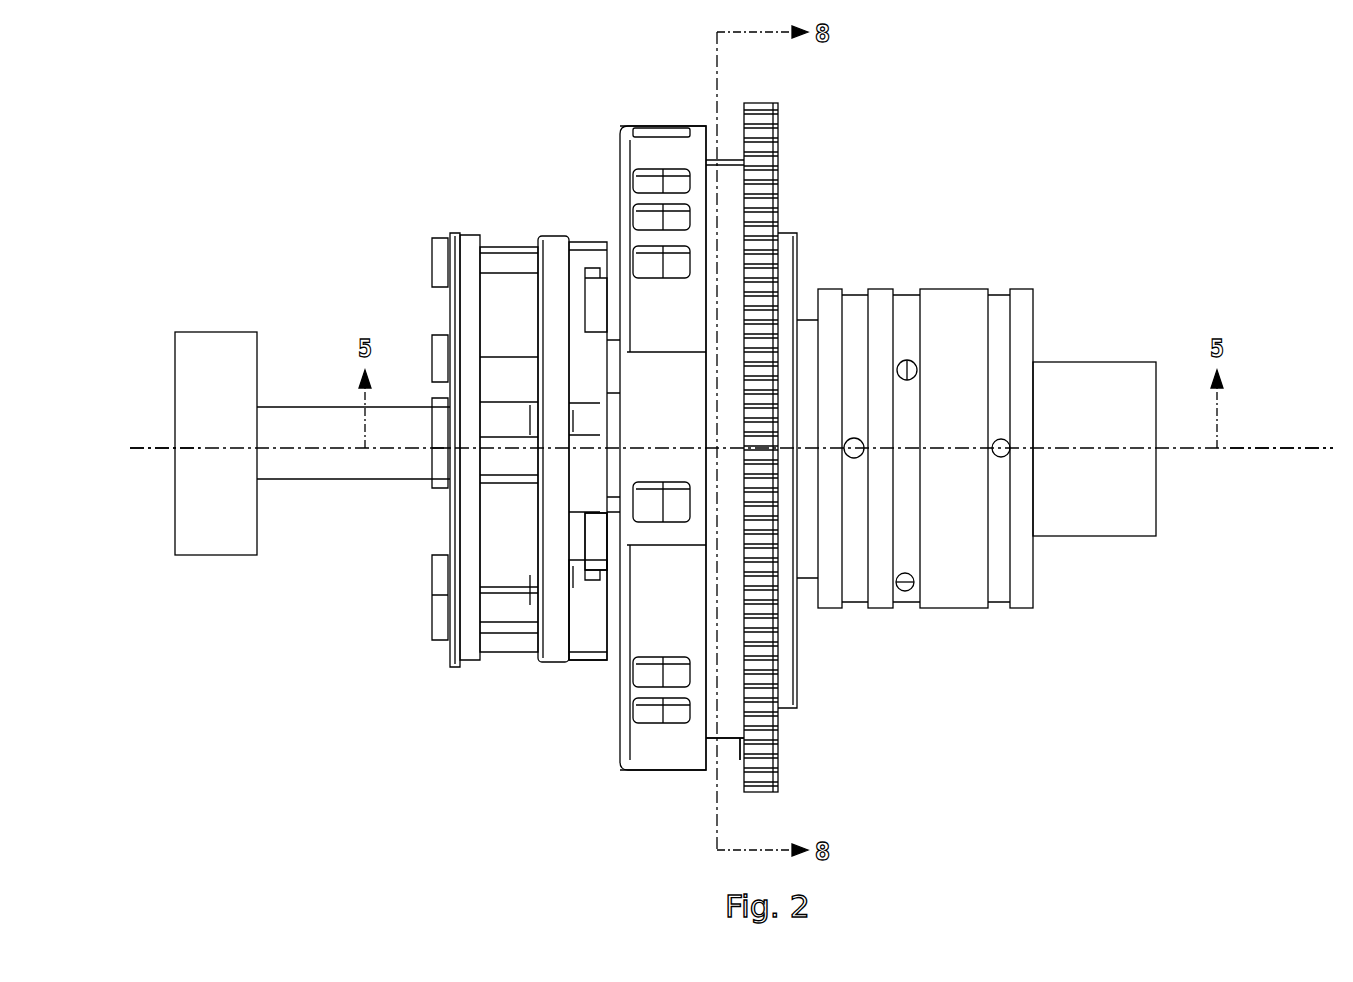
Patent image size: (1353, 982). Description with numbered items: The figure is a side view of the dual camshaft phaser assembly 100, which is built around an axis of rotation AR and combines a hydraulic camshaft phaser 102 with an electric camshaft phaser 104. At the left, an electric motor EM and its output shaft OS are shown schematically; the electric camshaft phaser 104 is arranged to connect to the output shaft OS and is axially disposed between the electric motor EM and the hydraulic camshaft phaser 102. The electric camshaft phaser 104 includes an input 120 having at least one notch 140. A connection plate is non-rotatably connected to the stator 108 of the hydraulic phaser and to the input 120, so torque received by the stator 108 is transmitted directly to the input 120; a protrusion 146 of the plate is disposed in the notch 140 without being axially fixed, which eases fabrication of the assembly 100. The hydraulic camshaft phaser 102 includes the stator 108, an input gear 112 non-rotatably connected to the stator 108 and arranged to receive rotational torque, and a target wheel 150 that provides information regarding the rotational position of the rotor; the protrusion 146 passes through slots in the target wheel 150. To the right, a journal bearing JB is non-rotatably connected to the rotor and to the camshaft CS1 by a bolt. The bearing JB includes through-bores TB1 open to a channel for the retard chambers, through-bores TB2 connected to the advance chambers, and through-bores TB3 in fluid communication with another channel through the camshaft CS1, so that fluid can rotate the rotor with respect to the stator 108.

The camshaft phaser assembly 100 is at (1003, 80).
The hydraulic camshaft phaser 102 is at (695, 117).
The electric camshaft phaser 104 is at (507, 236).
The stator 108 is at (732, 751).
The input gear 112 is at (760, 103).
The input 120 is at (553, 237).
The notch 140 is at (600, 583).
The protrusion 146 is at (598, 543).
The target wheel 150 is at (648, 126).
The electric motor EM is at (222, 332).
The output shaft OS is at (310, 407).
The journal bearing JB is at (942, 290).
The through-bores TB1 is at (854, 438).
The through-bores TB2 is at (905, 592).
The through-bores TB3 is at (1001, 439).
The camshaft CS1 is at (1095, 362).
The axis of rotation AR is at (1262, 448).